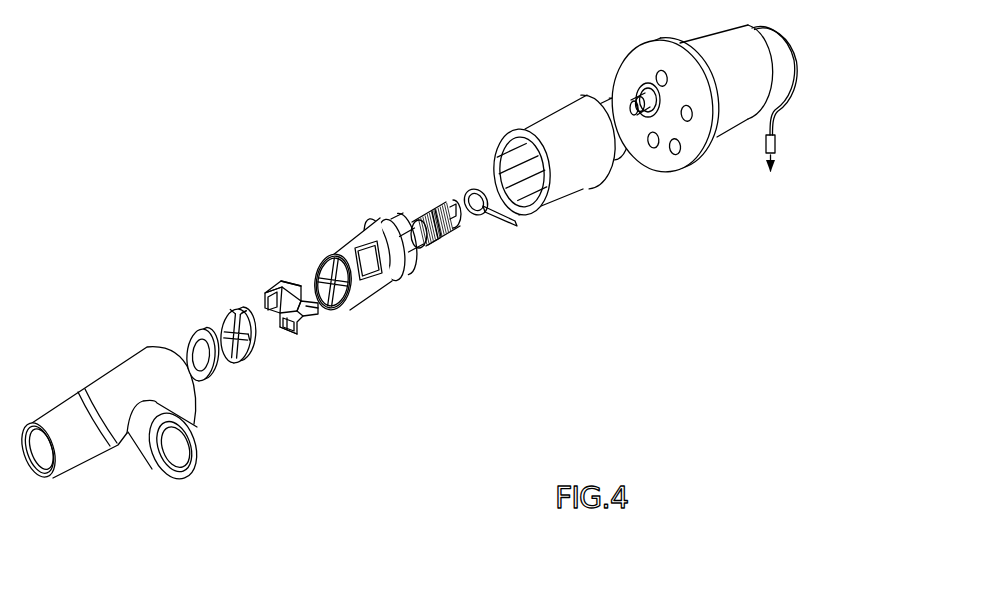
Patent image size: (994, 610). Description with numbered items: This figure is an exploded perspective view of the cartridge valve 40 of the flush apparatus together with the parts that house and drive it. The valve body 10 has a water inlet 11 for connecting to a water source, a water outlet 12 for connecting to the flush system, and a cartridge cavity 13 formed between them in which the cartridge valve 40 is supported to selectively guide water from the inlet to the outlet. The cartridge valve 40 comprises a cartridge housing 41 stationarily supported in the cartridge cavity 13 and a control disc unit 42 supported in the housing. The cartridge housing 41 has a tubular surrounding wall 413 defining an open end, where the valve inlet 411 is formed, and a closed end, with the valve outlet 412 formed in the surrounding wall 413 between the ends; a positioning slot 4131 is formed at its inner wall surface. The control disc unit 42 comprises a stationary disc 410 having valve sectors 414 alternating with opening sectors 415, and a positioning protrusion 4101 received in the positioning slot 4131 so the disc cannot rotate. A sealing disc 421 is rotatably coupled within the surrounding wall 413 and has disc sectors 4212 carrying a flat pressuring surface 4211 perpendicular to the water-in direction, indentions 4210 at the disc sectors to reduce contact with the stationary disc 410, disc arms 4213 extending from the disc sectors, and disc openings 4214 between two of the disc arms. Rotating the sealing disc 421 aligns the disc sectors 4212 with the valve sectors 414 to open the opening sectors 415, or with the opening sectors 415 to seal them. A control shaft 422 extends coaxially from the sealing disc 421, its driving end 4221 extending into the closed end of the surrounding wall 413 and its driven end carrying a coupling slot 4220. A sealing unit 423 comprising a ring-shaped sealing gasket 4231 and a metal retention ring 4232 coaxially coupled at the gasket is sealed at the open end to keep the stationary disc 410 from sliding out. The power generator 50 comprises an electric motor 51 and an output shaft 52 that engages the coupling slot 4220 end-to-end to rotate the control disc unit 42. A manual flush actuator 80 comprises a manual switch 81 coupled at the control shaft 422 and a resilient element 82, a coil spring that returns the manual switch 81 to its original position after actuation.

The valve body 10 is at (111, 405).
The water inlet 11 is at (63, 477).
The water outlet 12 is at (152, 470).
The cartridge cavity 13 is at (160, 345).
The cartridge valve 40 is at (313, 307).
The cartridge housing 41 is at (356, 229).
The stationary disc 410 is at (232, 378).
The positioning protrusion 4101 is at (228, 312).
The valve inlet 411 is at (302, 260).
The valve outlet 412 is at (382, 275).
The surrounding wall 413 is at (345, 238).
The positioning slot 4131 is at (327, 273).
The valve sectors 414 is at (218, 322).
The opening sectors 415 is at (226, 385).
The control disc unit 42 is at (313, 263).
The sealing disc 421 is at (331, 308).
The indentions 4210 is at (305, 332).
The flat pressuring surface 4211 is at (258, 288).
The disc sectors 4212 is at (418, 465).
The disc arms 4213 is at (303, 329).
The disc openings 4214 is at (312, 319).
The control shaft 422 is at (412, 178).
The coupling slot 4220 is at (457, 208).
The driving end 4221 is at (375, 216).
The sealing unit 423 is at (232, 378).
The sealing gasket 4231 is at (212, 380).
The retention ring 4232 is at (232, 356).
The power generator 50 is at (701, 190).
The electric motor 51 is at (693, 157).
The output shaft 52 is at (633, 113).
The manual flush actuator 80 is at (546, 229).
The manual switch 81 is at (516, 231).
The resilient element 82 is at (435, 247).